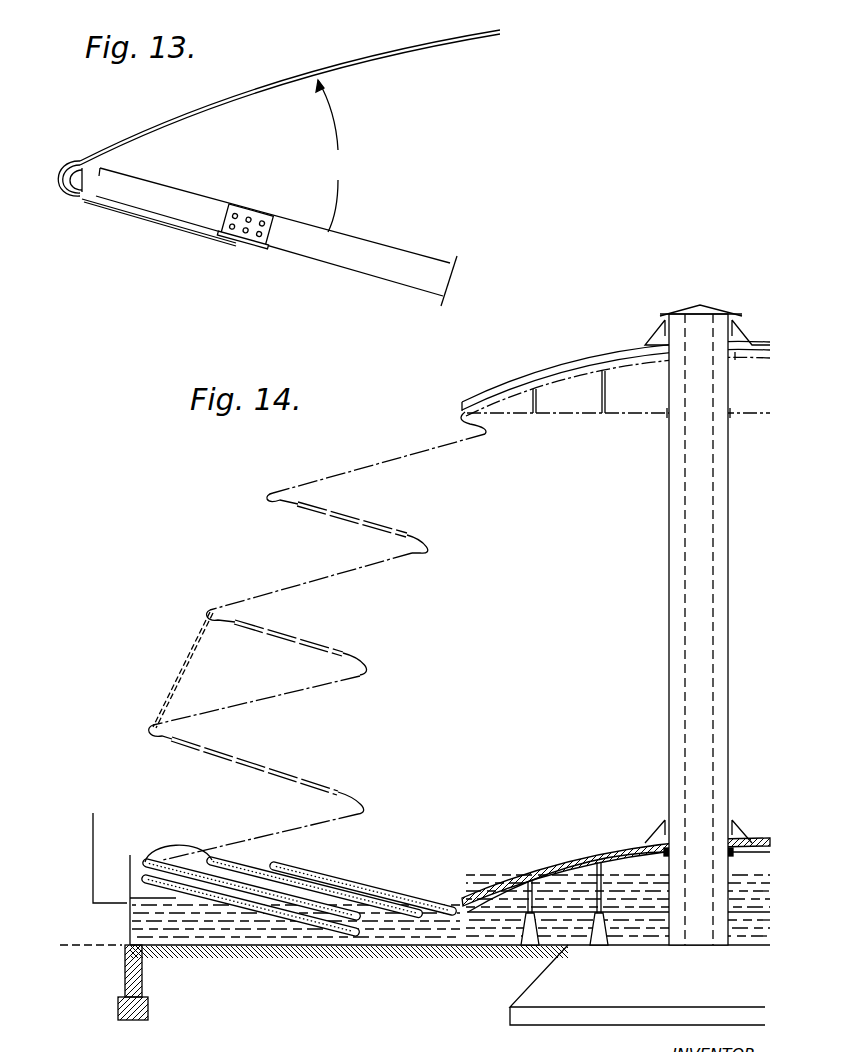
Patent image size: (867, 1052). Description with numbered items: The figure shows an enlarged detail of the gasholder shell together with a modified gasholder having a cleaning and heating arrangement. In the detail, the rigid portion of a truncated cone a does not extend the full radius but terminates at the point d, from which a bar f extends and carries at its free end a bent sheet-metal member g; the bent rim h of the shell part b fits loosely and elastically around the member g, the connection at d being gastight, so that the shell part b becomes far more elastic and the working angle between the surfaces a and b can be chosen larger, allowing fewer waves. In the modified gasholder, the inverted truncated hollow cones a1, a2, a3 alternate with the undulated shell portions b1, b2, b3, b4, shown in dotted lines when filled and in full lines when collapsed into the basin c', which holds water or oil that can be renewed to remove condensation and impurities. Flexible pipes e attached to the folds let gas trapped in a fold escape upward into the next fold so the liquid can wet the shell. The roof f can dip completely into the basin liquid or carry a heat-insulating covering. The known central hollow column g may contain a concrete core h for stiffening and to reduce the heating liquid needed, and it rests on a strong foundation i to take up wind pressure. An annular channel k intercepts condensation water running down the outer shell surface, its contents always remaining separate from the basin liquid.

In FIG. 13, the truncated cone a is at (276, 237).
In FIG. 13, the shell part b is at (290, 90).
In FIG. 13, the point of termination of rigid portion d is at (233, 237).
In FIG. 14, the point of termination of rigid portion d is at (273, 866).
In FIG. 13, the bar f is at (165, 204).
In FIG. 14, the bar f is at (594, 362).
In FIG. 13, the bent sheet-metal member g is at (93, 198).
In FIG. 14, the bent sheet-metal member g is at (668, 640).
In FIG. 13, the bent rim h is at (62, 165).
In FIG. 14, the bent rim h is at (708, 323).
In FIG. 14, the inverted truncated hollow cone a1 is at (243, 760).
In FIG. 14, the inverted truncated hollow cone a2 is at (275, 633).
In FIG. 14, the inverted truncated hollow cone a3 is at (337, 515).
In FIG. 14, the undulated shell portion b1 is at (263, 826).
In FIG. 14, the undulated shell portion b2 is at (260, 689).
In FIG. 14, the undulated shell portion b3 is at (319, 572).
In FIG. 14, the undulated shell portion b4 is at (379, 452).
In FIG. 14, the basin c' is at (415, 955).
In FIG. 14, the flexible pipe e is at (172, 850).
In FIG. 14, the foundation i is at (604, 1015).
In FIG. 14, the annular channel k is at (92, 902).